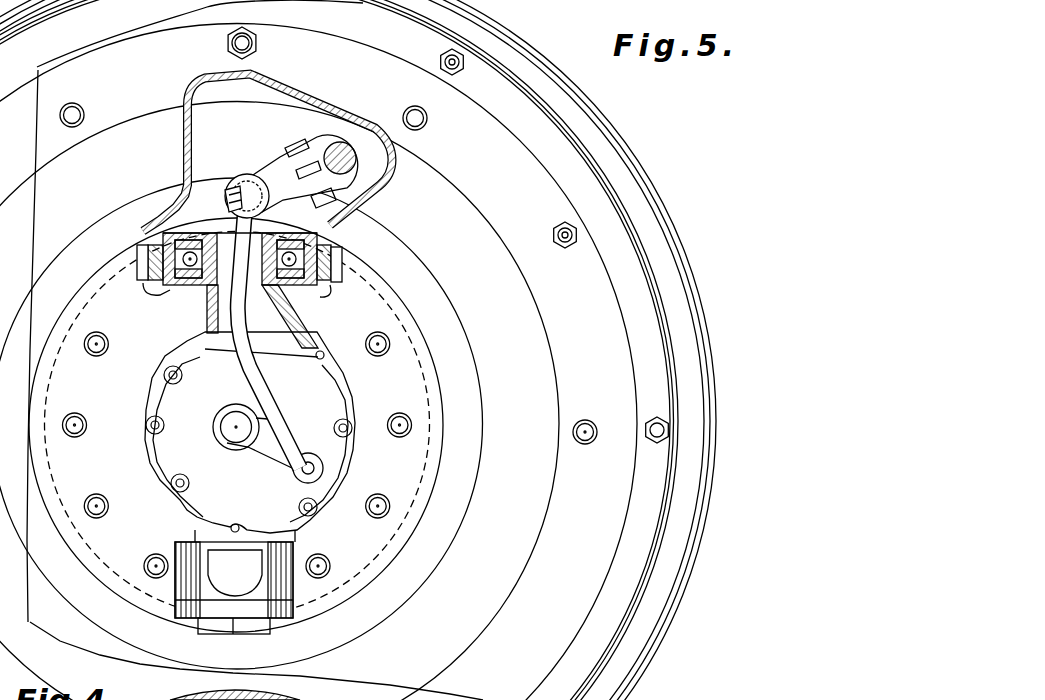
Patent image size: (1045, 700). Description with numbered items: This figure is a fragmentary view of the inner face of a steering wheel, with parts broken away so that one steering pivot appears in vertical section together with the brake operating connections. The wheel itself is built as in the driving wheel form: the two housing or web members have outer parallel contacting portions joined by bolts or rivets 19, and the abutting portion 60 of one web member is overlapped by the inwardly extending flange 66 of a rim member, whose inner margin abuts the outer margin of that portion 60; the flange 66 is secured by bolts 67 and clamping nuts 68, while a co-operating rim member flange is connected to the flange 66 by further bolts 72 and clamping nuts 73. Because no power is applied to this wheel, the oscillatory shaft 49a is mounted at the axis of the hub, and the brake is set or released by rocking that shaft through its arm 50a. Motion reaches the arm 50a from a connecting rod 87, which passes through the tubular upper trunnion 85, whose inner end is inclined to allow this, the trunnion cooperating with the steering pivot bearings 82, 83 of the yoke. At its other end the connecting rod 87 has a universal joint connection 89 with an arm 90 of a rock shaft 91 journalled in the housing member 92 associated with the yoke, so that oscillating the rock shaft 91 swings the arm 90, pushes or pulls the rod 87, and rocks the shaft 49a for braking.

The housing member 92 is at (318, 100).
The rock shaft 91 is at (336, 148).
The universal joint connection 89 is at (238, 185).
The arm 90 is at (290, 193).
The upper trunnion 85 is at (207, 300).
The steering pivot bearing 82 is at (318, 290).
The connecting rod 87 is at (263, 387).
The oscillatory shaft 49a is at (227, 431).
The arm 50a is at (286, 470).
The steering pivot bearing 83 is at (290, 562).
The clamping nut 73 is at (442, 56).
The bolt 72 is at (459, 70).
The clamping nut 68 is at (556, 230).
The bolt 67 is at (569, 246).
The inwardly extending flange 66 is at (318, 362).
The parallel contacting portion 60 is at (279, 401).
The bolts or rivets 19 is at (599, 432).